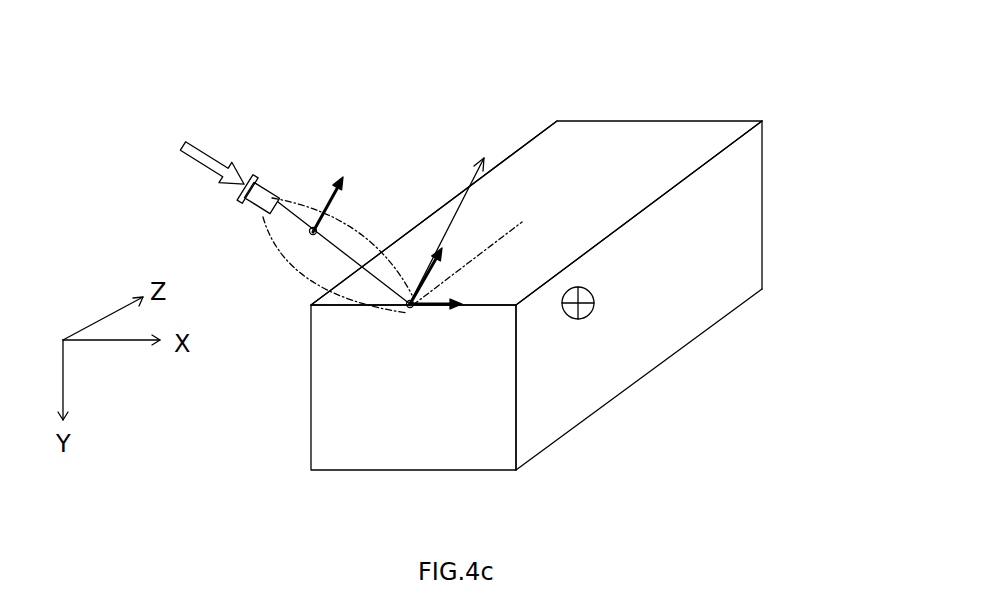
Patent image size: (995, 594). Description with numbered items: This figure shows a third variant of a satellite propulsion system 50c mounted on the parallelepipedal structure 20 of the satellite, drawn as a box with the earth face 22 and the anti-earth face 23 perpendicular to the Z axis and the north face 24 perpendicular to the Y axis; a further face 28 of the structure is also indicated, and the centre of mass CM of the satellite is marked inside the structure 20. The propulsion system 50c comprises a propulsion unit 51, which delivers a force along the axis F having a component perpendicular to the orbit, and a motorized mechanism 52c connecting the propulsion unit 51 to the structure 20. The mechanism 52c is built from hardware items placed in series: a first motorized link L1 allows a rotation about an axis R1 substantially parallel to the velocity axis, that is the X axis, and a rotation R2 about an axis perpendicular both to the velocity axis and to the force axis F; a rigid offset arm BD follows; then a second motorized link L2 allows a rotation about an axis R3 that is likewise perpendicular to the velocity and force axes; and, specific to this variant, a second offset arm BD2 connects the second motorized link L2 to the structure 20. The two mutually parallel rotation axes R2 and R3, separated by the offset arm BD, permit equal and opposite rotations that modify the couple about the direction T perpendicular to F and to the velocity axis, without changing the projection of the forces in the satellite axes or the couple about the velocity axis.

The parallelepipedal structure 20 is at (707, 155).
The earth face 22 is at (655, 120).
The anti-earth face 23 is at (470, 458).
The north face 24 is at (583, 140).
The side edge of object 28 is at (740, 226).
The centre of mass CM is at (594, 312).
The propulsion system 50c is at (353, 95).
The propulsion unit 51 is at (275, 178).
The force axis F is at (197, 147).
The second motorized link L2 is at (310, 245).
The motorized mechanism 52c is at (310, 275).
The rigid offset arm BD is at (380, 308).
The second offset arm BD2 is at (291, 214).
The first motorized link L1 is at (408, 312).
The first rotation axis R1 is at (432, 308).
The second rotation axis R2 is at (443, 247).
The third rotation axis R3 is at (345, 178).
The direction T is at (483, 152).